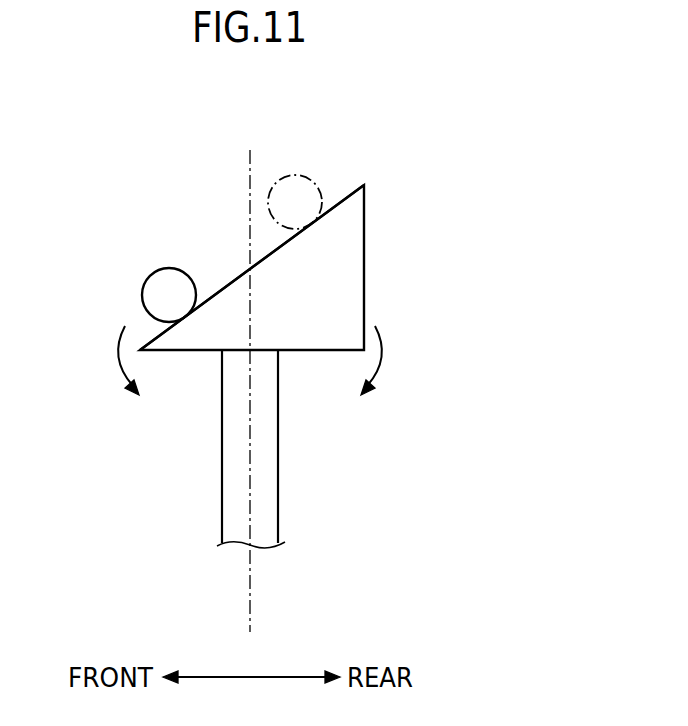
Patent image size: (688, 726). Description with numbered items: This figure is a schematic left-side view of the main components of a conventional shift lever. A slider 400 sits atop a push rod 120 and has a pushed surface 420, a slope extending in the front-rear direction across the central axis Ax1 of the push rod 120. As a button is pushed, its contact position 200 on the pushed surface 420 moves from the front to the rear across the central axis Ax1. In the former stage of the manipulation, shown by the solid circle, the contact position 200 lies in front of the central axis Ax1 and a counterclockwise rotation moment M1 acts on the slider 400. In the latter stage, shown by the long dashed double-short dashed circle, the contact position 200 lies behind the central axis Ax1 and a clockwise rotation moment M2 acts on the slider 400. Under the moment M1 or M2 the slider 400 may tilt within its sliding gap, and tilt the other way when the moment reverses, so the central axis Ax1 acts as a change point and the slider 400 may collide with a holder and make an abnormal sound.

The push rod 120 is at (281, 446).
The contact position 200 is at (166, 282).
The slider 400 is at (344, 282).
The pushed surface 420 is at (345, 188).
The counterclockwise rotation moment M1 is at (108, 360).
The clockwise rotation moment M2 is at (393, 360).
The central axis Ax1 is at (251, 590).